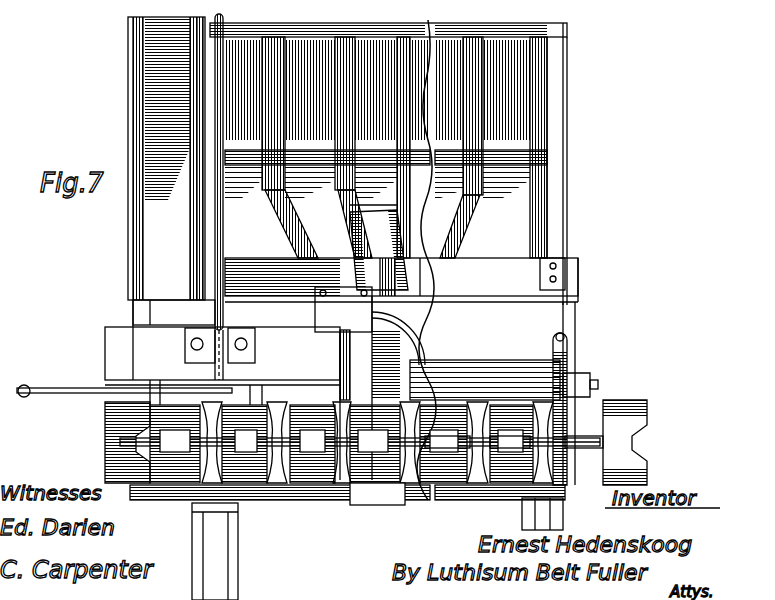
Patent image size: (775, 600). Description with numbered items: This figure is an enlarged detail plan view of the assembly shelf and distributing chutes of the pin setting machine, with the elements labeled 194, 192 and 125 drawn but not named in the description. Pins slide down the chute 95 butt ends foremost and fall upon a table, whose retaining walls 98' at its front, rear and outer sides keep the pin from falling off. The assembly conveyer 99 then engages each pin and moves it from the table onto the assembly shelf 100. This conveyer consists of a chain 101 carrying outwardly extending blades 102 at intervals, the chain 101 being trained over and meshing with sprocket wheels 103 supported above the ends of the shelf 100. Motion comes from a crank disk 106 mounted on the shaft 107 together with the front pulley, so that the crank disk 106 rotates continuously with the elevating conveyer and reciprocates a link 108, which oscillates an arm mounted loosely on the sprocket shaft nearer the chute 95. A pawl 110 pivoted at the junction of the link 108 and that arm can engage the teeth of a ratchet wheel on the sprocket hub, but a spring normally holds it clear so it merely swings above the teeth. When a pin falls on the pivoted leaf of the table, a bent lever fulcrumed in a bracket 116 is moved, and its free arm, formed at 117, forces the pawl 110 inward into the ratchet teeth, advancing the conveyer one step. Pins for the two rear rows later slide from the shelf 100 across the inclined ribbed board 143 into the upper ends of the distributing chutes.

The chute 95 is at (165, 212).
The hatched panel frame 194 is at (520, 97).
The hopper chute 192 is at (379, 247).
The inclined ribbed board 143 is at (510, 263).
The link 108 is at (179, 378).
The shaft 107 is at (223, 314).
The bracket 116 is at (152, 380).
The crank disk 106 is at (246, 378).
The assembly shelf 100 is at (485, 421).
The chain 101 is at (500, 448).
The assembly conveyer 99 is at (508, 447).
The collar 125 is at (237, 426).
The sprocket wheels 103 is at (252, 447).
The formed free arm of lever 117 is at (127, 442).
The pawl 110 is at (175, 444).
The blades 102 is at (648, 408).
The retaining walls 98' is at (347, 541).